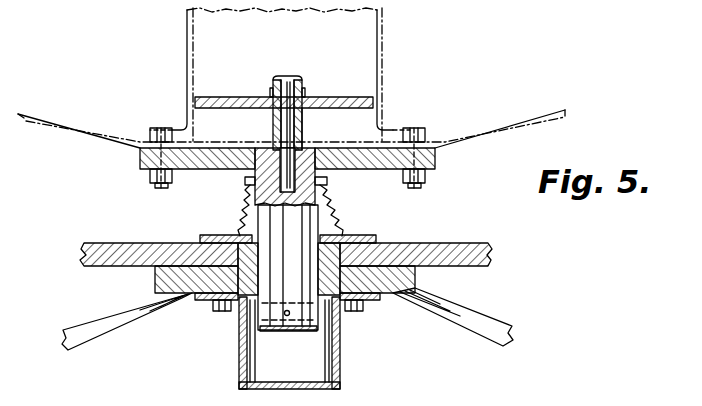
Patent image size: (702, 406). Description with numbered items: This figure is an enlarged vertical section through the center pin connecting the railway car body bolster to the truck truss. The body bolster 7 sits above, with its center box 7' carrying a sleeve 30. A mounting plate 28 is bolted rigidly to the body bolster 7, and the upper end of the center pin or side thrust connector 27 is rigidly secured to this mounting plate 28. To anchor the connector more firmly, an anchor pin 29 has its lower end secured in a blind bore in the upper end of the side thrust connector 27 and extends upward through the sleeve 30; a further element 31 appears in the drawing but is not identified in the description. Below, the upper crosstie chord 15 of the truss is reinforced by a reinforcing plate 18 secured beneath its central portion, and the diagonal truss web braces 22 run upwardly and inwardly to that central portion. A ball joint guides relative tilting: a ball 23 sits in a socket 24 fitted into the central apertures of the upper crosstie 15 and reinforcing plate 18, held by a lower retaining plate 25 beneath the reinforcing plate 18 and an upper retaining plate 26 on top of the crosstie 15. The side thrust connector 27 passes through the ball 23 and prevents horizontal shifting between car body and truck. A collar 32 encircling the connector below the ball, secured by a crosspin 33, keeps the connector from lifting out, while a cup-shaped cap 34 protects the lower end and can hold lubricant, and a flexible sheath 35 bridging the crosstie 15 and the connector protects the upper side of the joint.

The body bolster 7 is at (291, 112).
The center box 7' is at (271, 75).
The upper crosstie chord 15 is at (118, 243).
The reinforcing plate 18 is at (417, 280).
The diagonal truss web braces 22 is at (128, 320).
The ball 23 is at (365, 312).
The socket 24 is at (382, 244).
The lower retaining plate 25 is at (185, 300).
The upper retaining plate 26 is at (230, 232).
The side thrust connector 27 is at (300, 232).
The mounting plate 28 is at (390, 170).
The anchor pin 29 is at (288, 78).
The sleeve 30 is at (306, 122).
The upper plate 31 is at (340, 100).
The collar 32 is at (226, 320).
The crosspin 33 is at (282, 318).
The cap 34 is at (342, 368).
The flexible sheath 35 is at (240, 203).